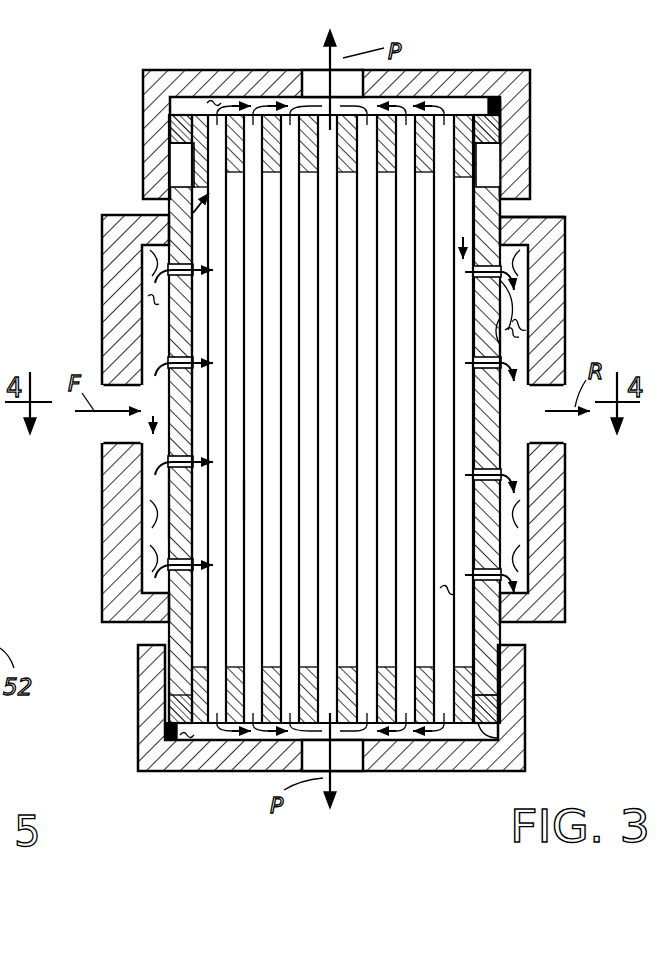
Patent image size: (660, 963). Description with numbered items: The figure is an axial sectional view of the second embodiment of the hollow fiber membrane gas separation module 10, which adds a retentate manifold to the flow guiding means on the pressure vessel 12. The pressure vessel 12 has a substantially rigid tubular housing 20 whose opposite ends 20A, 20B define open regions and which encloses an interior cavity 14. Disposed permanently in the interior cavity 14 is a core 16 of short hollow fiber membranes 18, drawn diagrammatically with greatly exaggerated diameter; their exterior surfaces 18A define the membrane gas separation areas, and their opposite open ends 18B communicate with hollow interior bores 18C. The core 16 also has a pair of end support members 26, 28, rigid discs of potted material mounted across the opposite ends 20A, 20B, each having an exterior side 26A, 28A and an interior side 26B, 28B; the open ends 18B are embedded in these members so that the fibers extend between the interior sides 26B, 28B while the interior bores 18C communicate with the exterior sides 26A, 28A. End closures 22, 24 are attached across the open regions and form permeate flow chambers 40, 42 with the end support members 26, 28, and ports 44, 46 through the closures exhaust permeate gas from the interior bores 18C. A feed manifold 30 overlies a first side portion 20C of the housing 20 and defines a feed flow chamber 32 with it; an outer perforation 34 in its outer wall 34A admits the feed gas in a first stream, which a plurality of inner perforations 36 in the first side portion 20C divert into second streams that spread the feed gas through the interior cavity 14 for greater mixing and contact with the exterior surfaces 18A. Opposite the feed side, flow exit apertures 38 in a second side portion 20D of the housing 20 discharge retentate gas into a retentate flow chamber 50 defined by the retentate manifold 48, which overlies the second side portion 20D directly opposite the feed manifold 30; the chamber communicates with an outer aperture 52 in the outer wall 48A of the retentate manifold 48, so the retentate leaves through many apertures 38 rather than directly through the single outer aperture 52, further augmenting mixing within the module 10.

The gas separation module 10 is at (584, 88).
The pressure vessel 12 is at (506, 206).
The interior cavity 14 is at (532, 219).
The core 16 is at (510, 68).
The hollow fiber membranes 18 is at (246, 218).
The exterior surfaces 18A is at (243, 504).
The open ends 18B is at (188, 110).
The interior bores 18C is at (460, 630).
The tubular housing 20 is at (167, 630).
The end of housing 20A is at (503, 148).
The end of housing 20B is at (166, 690).
The first side portion 20C is at (168, 503).
The second side portion 20D is at (503, 343).
The end closure 22 is at (408, 74).
The end closure 24 is at (237, 767).
The end support member 26 is at (176, 133).
The exterior side 26A is at (179, 113).
The interior side 26B is at (472, 183).
The end support member 28 is at (178, 712).
The exterior side 28A is at (497, 728).
The interior side 28B is at (474, 662).
The feed manifold 30 is at (100, 226).
The feed flow chamber 32 is at (146, 300).
The outer perforation 34 is at (108, 426).
The outer wall 34A is at (103, 566).
The inner perforations 36 is at (168, 262).
The flow exit apertures 38 is at (512, 302).
The permeate flow chamber 40 is at (232, 100).
The permeate flow chamber 42 is at (140, 745).
The port 44 is at (305, 95).
The port 46 is at (340, 771).
The retentate manifold 48 is at (567, 244).
The outer wall 48A is at (566, 548).
The retentate flow chamber 50 is at (522, 328).
The outer aperture 52 is at (567, 432).